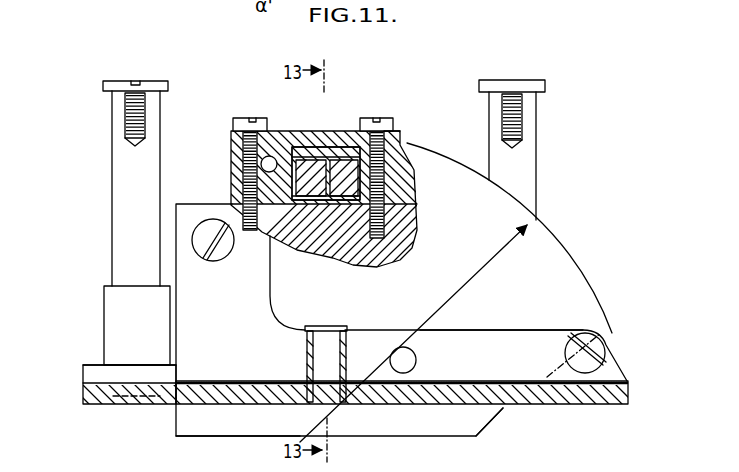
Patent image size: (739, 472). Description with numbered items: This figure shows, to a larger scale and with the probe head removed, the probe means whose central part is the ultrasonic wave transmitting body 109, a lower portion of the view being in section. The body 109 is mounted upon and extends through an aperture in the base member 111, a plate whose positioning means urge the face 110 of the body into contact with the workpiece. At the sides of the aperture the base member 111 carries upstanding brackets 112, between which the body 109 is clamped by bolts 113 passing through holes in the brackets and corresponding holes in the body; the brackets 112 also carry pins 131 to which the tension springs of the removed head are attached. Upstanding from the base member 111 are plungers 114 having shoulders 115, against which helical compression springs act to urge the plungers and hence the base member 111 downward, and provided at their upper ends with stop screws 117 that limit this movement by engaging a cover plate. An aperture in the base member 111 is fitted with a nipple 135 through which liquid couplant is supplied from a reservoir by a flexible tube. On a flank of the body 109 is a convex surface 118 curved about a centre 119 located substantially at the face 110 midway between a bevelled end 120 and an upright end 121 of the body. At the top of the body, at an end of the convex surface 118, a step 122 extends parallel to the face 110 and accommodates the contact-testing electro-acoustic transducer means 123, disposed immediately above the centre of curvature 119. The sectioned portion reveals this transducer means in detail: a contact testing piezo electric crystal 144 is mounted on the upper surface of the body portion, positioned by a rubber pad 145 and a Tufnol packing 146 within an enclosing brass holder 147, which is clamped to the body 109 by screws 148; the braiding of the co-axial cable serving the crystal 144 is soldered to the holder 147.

The ultrasonic wave transmitting body 109 is at (427, 322).
The face 110 is at (413, 343).
The base member 111 is at (480, 392).
The upstanding brackets 112 is at (530, 338).
The bolts 113 is at (207, 233).
The plungers 114 is at (125, 186).
The shoulders 115 is at (112, 283).
The stop screws 117 is at (540, 86).
The convex surface 118 is at (548, 239).
The centre 119 is at (283, 437).
The bevelled end 120 is at (510, 402).
The upright end 121 is at (177, 353).
The step 122 is at (390, 200).
The contact-testing electro-acoustic transducer means 123 is at (398, 130).
The pins 131 is at (405, 363).
The nipple 135 is at (262, 385).
The contact testing piezo electric crystal 144 is at (380, 212).
The rubber pad 145 is at (362, 203).
The Tufnol packing 146 is at (362, 163).
The brass holder 147 is at (393, 153).
The screws 148 is at (262, 122).